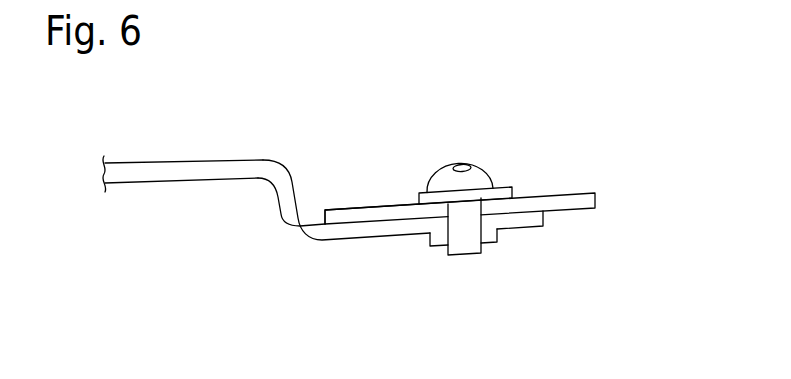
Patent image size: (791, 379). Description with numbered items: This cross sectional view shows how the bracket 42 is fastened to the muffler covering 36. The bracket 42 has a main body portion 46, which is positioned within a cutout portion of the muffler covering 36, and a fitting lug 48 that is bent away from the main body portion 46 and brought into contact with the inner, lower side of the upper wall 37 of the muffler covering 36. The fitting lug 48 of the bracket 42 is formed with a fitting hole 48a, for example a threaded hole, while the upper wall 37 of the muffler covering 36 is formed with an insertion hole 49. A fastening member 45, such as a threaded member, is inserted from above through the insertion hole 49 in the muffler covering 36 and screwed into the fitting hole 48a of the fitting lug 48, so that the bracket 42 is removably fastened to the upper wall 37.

The muffler covering 36 is at (501, 175).
The upper wall 37 is at (362, 208).
The bracket 42 is at (323, 191).
The fastening member 45 is at (487, 174).
The main body portion 46 is at (173, 163).
The fitting lug 48 is at (366, 237).
The fitting hole 48a is at (452, 233).
The insertion hole 49 is at (491, 148).